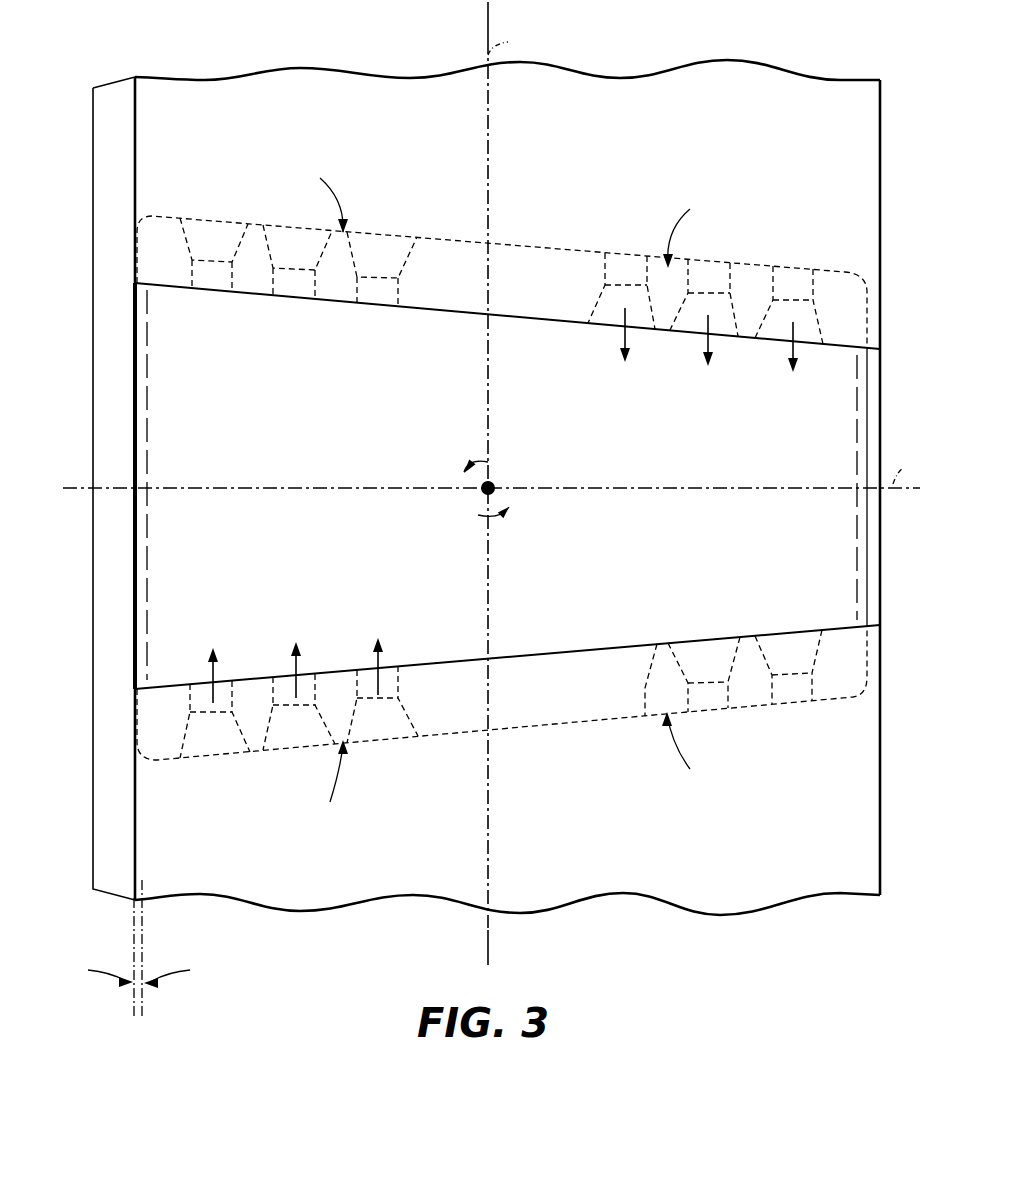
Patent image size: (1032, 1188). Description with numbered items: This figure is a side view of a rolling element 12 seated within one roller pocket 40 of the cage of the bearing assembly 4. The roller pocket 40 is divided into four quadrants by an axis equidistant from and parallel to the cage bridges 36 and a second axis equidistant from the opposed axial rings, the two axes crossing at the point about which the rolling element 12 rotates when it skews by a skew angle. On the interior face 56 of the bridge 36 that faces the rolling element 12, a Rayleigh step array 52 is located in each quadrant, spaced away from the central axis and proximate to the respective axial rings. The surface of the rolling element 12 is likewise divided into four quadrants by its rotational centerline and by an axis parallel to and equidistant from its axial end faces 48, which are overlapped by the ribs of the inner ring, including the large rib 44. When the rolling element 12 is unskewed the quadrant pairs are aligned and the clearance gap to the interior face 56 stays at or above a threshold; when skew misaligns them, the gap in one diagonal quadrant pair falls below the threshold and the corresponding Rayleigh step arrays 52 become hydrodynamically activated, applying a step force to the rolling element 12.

The bearing assembly 4 is at (478, 18).
The rolling element 12 is at (530, 375).
The bridge 36 is at (302, 100).
The roller pocket 40 is at (62, 185).
The large rib 44 is at (98, 106).
The axial end face 48 is at (140, 540).
The Rayleigh step array 52 is at (422, 323).
The interior face 56 is at (797, 708).